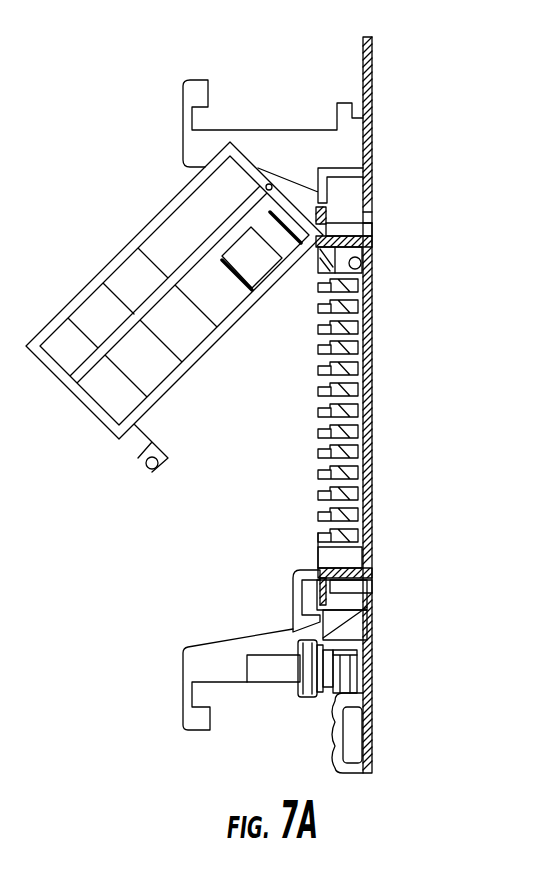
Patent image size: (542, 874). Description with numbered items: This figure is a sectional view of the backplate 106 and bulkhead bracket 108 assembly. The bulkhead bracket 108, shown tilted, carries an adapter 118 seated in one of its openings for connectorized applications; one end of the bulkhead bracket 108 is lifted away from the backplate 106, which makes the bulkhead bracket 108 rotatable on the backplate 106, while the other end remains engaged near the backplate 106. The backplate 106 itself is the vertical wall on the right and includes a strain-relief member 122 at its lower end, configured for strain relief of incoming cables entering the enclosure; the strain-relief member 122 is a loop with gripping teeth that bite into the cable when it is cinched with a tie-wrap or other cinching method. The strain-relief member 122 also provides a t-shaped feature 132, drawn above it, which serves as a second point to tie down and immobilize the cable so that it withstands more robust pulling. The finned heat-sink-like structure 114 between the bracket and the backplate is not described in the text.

The backplate 106 is at (373, 96).
The bulkhead bracket 108 is at (56, 311).
The heat sink fins 114 is at (348, 533).
The adapter 118 is at (278, 232).
The strain-relief member 122 is at (353, 733).
The t-shaped feature 132 is at (297, 593).